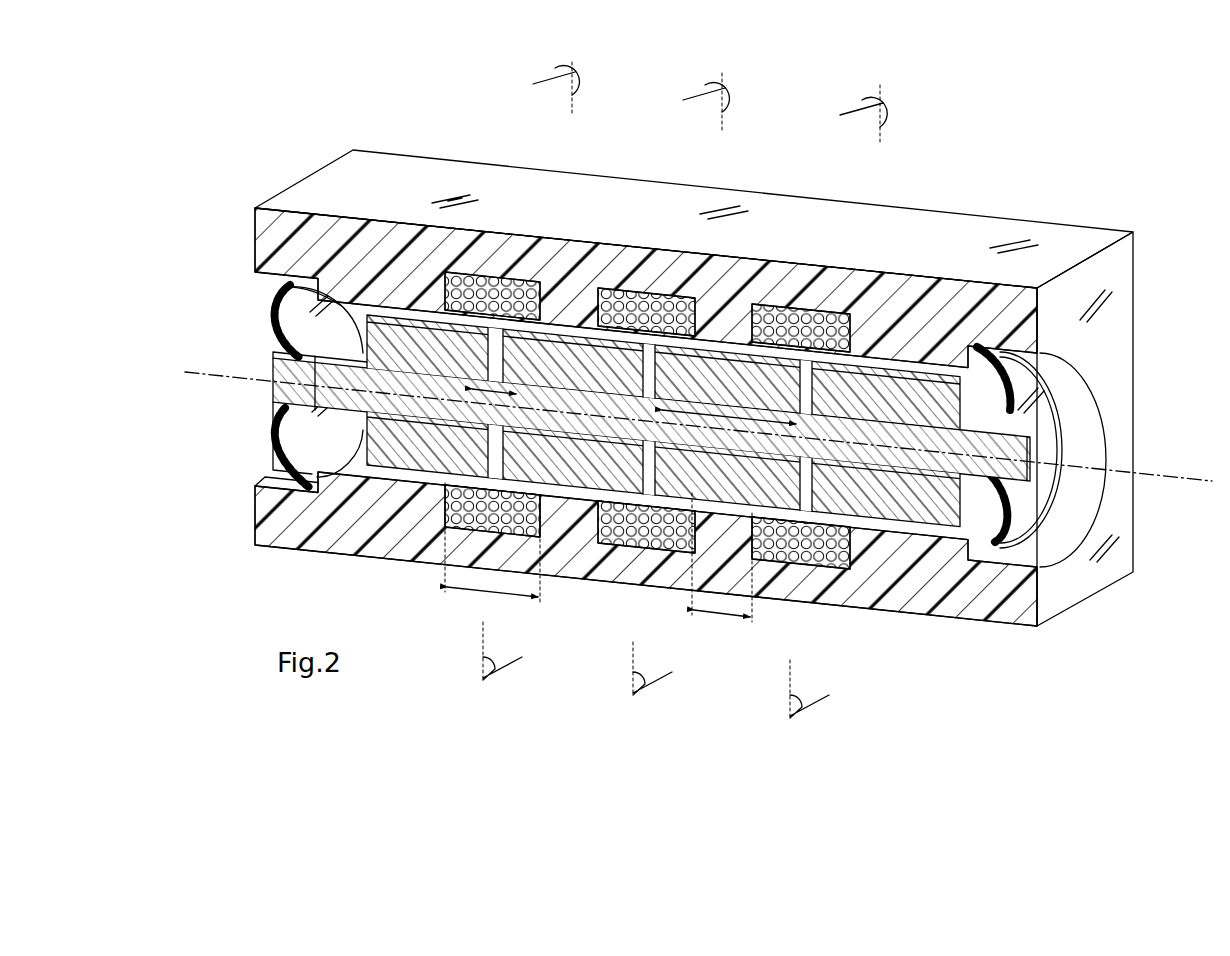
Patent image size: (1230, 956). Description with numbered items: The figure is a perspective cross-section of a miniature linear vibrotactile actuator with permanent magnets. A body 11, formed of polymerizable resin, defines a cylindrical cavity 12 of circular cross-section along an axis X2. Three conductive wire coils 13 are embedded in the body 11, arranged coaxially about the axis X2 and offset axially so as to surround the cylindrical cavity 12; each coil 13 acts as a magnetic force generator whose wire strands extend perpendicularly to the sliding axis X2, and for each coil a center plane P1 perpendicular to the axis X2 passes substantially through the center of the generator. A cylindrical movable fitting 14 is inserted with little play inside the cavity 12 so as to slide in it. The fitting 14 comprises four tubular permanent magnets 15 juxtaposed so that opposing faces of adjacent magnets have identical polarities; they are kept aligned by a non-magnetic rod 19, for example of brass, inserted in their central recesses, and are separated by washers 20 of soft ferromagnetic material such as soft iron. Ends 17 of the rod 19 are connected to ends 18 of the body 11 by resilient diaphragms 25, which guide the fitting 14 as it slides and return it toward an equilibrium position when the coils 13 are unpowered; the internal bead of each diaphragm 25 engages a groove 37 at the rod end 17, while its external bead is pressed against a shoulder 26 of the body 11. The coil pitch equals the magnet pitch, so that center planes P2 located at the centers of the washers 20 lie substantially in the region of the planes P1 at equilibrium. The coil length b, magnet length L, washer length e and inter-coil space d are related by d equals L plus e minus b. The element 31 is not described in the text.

The body 11 is at (243, 243).
The cylindrical cavity 12 is at (935, 530).
The conductive wire coils 13 is at (478, 270).
The cylindrical movable fitting 14 is at (318, 434).
The tubular permanent magnets 15 is at (406, 330).
The ends of the rod 17 is at (268, 397).
The ends of the body 18 is at (267, 502).
The rod 19 is at (630, 457).
The washers 20 is at (468, 456).
The resilient diaphragms 25 is at (287, 287).
The shoulder 26 is at (322, 285).
The bearing outer ring 31 is at (283, 333).
The groove 37 is at (1067, 483).
The axis X2 is at (698, 426).
The center plane of a force generator P1 is at (905, 99).
The center plane between two adjacent magnets P2 is at (823, 734).
The length of a coil b is at (492, 550).
The length of the space between two adjacent coils d is at (722, 567).
The length of a washer e is at (502, 402).
The length of a magnet L is at (729, 427).